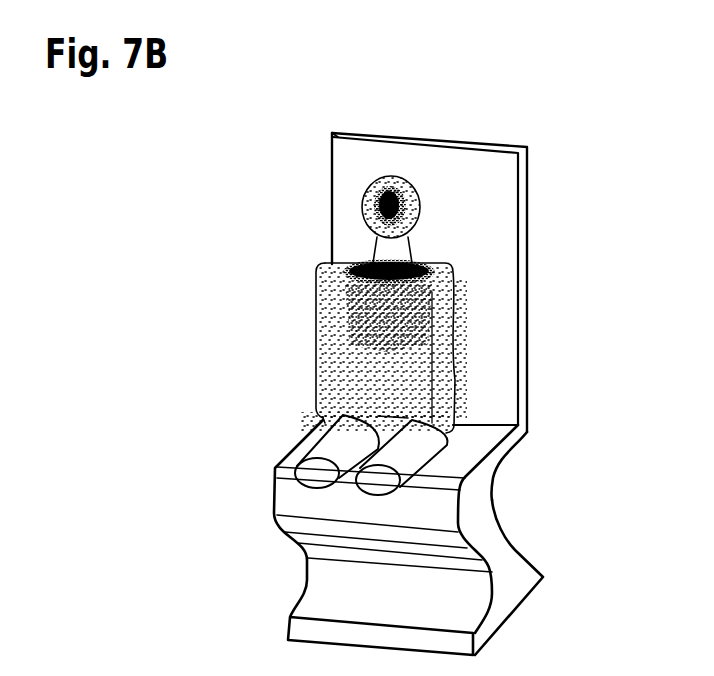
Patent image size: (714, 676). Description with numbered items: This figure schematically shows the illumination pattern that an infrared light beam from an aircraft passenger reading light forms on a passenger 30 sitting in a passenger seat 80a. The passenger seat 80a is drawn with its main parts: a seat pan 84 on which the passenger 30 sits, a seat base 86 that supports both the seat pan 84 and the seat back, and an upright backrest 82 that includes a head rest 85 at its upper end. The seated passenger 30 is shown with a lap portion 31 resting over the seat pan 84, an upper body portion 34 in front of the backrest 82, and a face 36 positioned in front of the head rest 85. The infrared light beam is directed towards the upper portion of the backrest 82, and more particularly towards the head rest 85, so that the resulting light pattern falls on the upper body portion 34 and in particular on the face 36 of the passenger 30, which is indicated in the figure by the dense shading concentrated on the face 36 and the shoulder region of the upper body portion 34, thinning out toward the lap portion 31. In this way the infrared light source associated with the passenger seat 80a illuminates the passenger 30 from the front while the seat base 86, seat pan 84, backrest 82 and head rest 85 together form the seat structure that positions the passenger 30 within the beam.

The passenger 30 is at (338, 335).
The lap portion 31 is at (293, 420).
The upper body portion 34 is at (343, 298).
The face 36 is at (377, 207).
The passenger seat 80a is at (466, 239).
The backrest 82 is at (510, 246).
The seat pan 84 is at (510, 448).
The head rest 85 is at (510, 186).
The seat base 86 is at (543, 538).